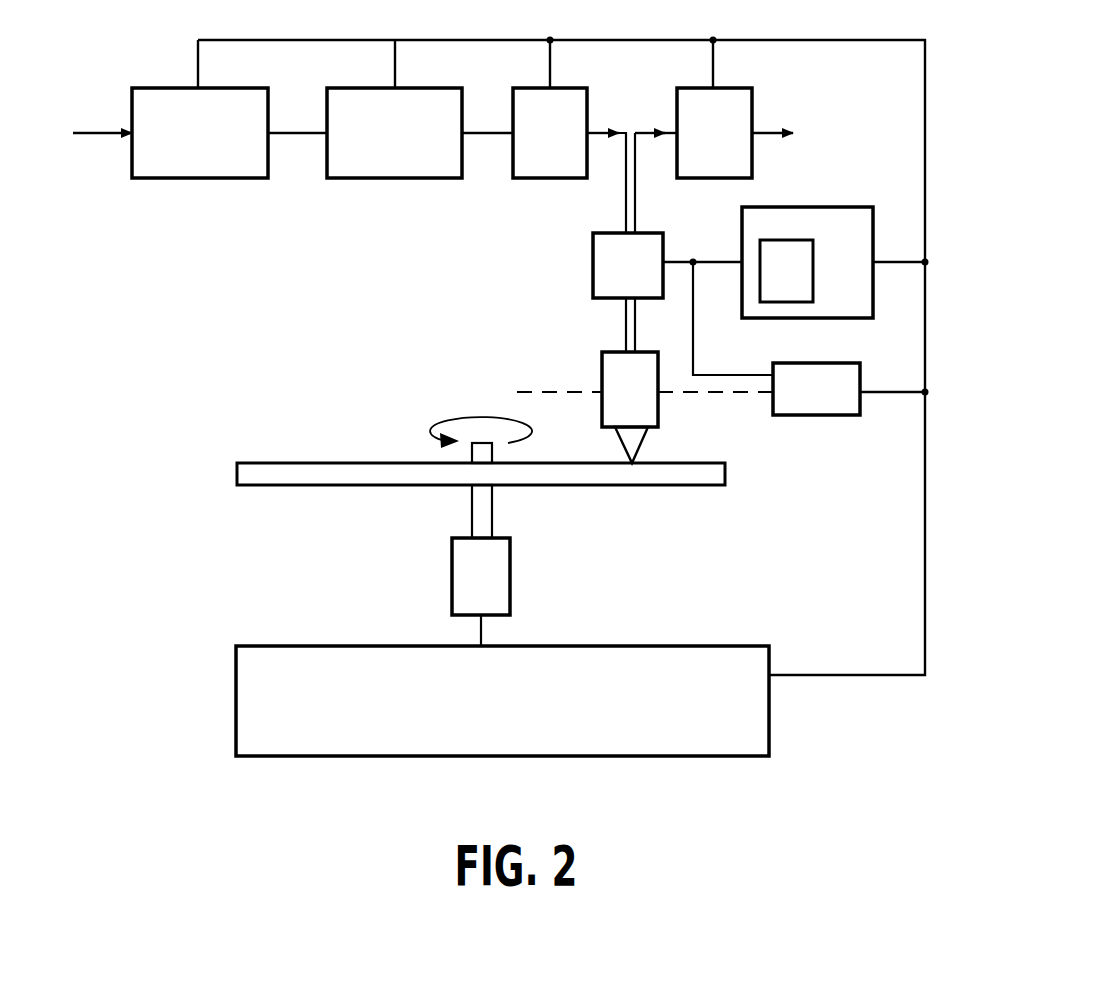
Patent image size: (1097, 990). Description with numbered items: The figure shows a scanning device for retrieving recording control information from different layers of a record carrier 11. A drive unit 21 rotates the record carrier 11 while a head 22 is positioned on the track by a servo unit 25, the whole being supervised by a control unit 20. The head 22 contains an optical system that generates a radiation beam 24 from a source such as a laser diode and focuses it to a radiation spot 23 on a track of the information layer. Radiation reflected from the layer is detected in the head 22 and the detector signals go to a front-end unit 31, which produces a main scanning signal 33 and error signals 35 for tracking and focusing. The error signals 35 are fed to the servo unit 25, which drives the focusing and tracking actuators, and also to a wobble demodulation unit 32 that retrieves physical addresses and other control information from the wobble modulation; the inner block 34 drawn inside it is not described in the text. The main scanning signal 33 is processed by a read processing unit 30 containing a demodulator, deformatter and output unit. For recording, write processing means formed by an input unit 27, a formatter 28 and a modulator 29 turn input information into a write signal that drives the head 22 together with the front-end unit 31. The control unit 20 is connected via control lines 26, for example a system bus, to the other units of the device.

The record carrier 11 is at (695, 485).
The control unit 20 is at (731, 646).
The drive unit 21 is at (510, 565).
The head 22 is at (602, 372).
The radiation spot 23 is at (637, 461).
The radiation beam 24 is at (618, 440).
The servo unit 25 is at (813, 415).
The control lines 26 is at (925, 140).
The input unit 27 is at (198, 178).
The formatter 28 is at (337, 178).
The modulator 29 is at (545, 178).
The read processing unit 30 is at (752, 97).
The front-end unit 31 is at (593, 268).
The wobble demodulation unit 32 is at (828, 207).
The main scanning signal 33 is at (636, 193).
The memory register 34 is at (813, 280).
The error signals 35 is at (693, 352).